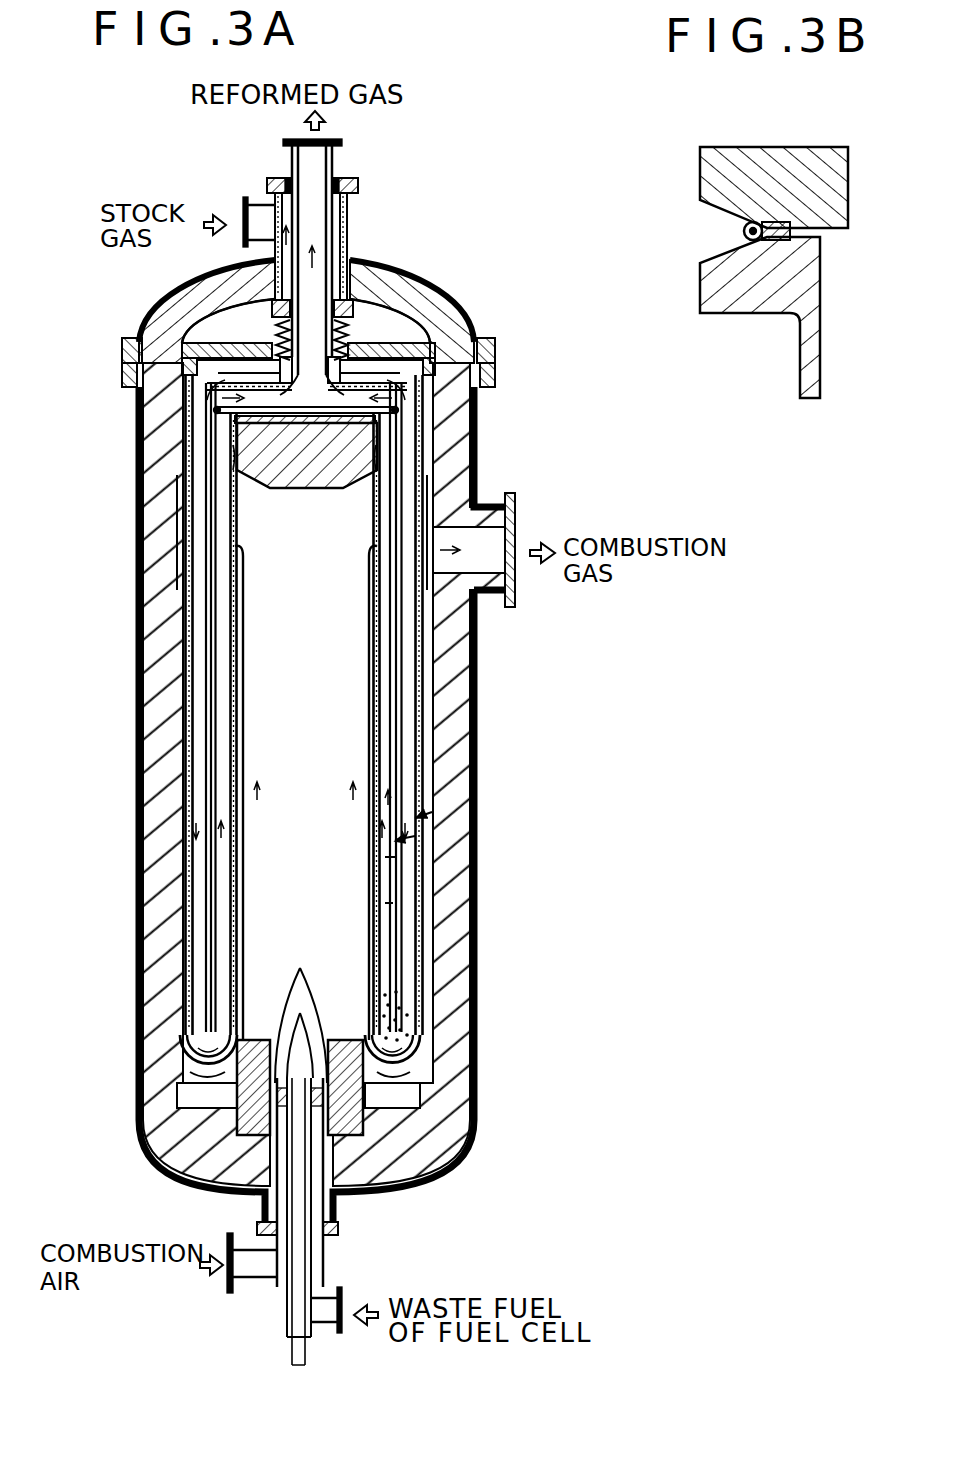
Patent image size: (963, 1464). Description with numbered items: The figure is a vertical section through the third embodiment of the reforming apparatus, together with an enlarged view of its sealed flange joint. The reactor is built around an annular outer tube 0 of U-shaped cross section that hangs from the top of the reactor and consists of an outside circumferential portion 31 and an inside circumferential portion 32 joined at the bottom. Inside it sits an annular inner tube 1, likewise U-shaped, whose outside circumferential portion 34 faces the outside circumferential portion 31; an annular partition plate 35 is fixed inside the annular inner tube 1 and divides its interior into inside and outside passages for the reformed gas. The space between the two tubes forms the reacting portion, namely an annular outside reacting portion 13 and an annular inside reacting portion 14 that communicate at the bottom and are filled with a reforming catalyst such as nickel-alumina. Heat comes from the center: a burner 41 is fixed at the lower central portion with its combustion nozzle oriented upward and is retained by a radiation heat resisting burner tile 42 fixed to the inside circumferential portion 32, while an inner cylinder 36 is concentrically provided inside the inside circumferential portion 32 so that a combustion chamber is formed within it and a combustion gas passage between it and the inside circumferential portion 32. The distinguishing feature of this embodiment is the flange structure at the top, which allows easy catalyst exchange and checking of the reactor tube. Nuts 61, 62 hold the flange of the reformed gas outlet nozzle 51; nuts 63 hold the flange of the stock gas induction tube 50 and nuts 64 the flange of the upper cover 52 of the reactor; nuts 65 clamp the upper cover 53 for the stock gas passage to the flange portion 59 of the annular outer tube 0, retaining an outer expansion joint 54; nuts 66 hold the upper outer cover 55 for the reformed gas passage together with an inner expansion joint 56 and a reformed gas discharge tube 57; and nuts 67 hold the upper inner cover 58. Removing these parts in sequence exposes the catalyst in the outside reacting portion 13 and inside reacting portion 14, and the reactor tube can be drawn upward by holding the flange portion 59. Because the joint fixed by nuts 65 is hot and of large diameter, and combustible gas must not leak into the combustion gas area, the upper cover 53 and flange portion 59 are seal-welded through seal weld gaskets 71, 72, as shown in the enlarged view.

In FIG. 3A, the annular outside reacting portion 13 is at (192, 662).
In FIG. 3A, the annular inside reacting portion 14 is at (213, 732).
In FIG. 3A, the outside circumferential portion 31 is at (412, 690).
In FIG. 3A, the inside circumferential portion 32 is at (376, 748).
In FIG. 3A, the outside circumferential portion 34 is at (396, 857).
In FIG. 3A, the annular partition plate 35 is at (394, 904).
In FIG. 3A, the inner cylinder 36 is at (377, 937).
In FIG. 3A, the burner 41 is at (313, 1248).
In FIG. 3A, the burner tile 42 is at (355, 1130).
In FIG. 3A, the stock gas induction tube 50 is at (348, 205).
In FIG. 3A, the reformed gas outlet nozzle 51 is at (334, 152).
In FIG. 3A, the upper cover 52 is at (452, 298).
In FIG. 3A, the upper cover for stock gas passage 53 is at (168, 298).
In FIG. 3B, the upper cover for stock gas passage 53 is at (706, 170).
In FIG. 3A, the outer expansion joint 54 is at (262, 328).
In FIG. 3A, the upper outer cover 55 is at (380, 424).
In FIG. 3A, the inner expansion joint 56 is at (350, 345).
In FIG. 3A, the reformed gas discharge tube 57 is at (347, 242).
In FIG. 3A, the upper inner cover 58 is at (180, 480).
In FIG. 3A, the flange portion 59 is at (165, 392).
In FIG. 3B, the flange portion 59 is at (710, 298).
In FIG. 3A, the nuts 61 is at (284, 178).
In FIG. 3A, the nuts 62 is at (273, 181).
In FIG. 3A, the nuts 63 is at (352, 302).
In FIG. 3A, the nuts 64 is at (135, 338).
In FIG. 3A, the nuts 65 is at (480, 340).
In FIG. 3A, the nuts 66 is at (400, 410).
In FIG. 3A, the nuts 67 is at (215, 392).
In FIG. 3B, the seal weld gasket 71 is at (762, 222).
In FIG. 3B, the seal weld gasket 72 is at (793, 240).
In FIG. 3A, the annular outer tube 0 is at (430, 815).
In FIG. 3A, the annular inner tube 1 is at (412, 838).